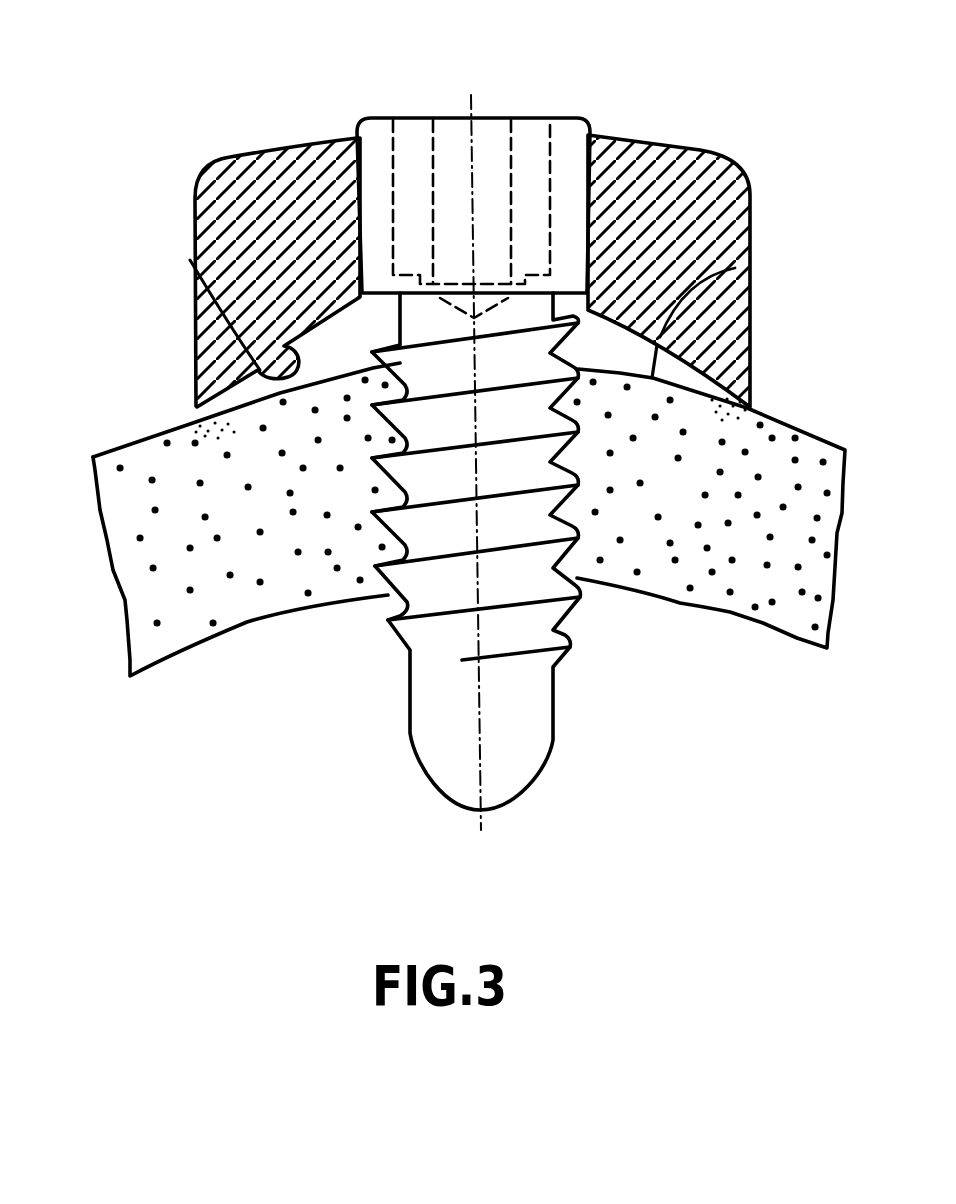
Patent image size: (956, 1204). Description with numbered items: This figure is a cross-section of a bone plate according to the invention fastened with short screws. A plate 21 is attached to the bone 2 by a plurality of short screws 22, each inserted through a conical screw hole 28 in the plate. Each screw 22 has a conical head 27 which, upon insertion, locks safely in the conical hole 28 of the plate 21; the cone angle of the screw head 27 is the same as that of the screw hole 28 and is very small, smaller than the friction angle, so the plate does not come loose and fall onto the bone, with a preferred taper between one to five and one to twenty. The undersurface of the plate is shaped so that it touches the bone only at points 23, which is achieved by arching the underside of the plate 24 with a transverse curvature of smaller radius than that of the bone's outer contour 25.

The bone 2 is at (133, 477).
The plate 21 is at (718, 196).
The short screw 22 is at (451, 438).
The contact points 23 is at (187, 423).
The underside of the plate 24 is at (190, 262).
The outer contour of the bone 25 is at (735, 268).
The conical head 27 is at (533, 143).
The conical screw hole 28 is at (362, 168).